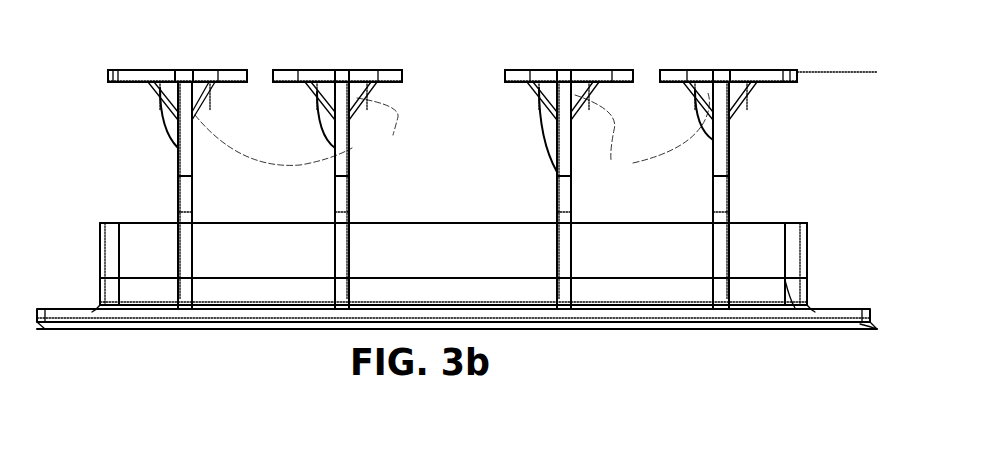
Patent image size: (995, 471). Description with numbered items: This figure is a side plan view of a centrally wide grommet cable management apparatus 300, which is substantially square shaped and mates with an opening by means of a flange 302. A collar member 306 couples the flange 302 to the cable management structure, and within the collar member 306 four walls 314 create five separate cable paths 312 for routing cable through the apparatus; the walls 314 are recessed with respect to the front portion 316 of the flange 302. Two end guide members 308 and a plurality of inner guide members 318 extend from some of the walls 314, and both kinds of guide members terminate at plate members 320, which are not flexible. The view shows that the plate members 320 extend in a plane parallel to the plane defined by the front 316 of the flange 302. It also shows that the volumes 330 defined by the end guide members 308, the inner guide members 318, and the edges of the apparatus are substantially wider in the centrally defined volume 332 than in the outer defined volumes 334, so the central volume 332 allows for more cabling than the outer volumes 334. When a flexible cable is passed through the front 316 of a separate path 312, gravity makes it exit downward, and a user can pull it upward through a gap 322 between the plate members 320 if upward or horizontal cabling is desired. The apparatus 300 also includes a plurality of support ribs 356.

The cable management apparatus 300 is at (238, 346).
The flange 302 is at (730, 311).
The collar member 306 is at (114, 262).
The end guide member 308 is at (182, 130).
The cable path 312 is at (118, 208).
The wall 314 is at (181, 200).
The front portion of flange 316 is at (588, 320).
The inner guide member 318 is at (313, 70).
The plate member 320 is at (147, 75).
The gap 322 is at (266, 84).
The volume 330 is at (149, 145).
The central volume 332 is at (450, 116).
The outer volume 334 is at (277, 121).
The support rib 356 is at (335, 149).